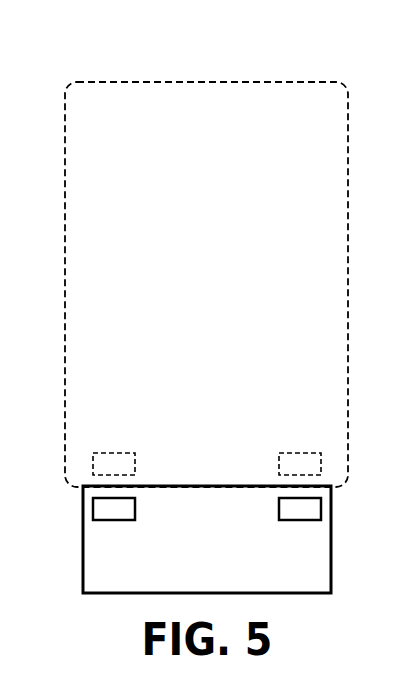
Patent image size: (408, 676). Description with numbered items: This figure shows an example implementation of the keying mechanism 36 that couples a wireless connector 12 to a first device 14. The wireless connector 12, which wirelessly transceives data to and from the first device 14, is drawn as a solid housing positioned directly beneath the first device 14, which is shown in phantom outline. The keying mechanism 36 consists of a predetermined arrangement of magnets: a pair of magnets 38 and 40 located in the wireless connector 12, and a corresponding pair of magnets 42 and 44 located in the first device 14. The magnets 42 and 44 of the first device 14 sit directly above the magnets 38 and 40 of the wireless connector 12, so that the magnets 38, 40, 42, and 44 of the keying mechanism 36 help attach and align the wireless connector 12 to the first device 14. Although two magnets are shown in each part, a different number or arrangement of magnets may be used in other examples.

The wireless connector 12 is at (331, 540).
The first device 14 is at (210, 82).
The keying mechanism 36 is at (128, 567).
The magnet 38 is at (135, 508).
The magnet 40 is at (297, 520).
The magnet 42 is at (119, 453).
The magnet 44 is at (304, 453).